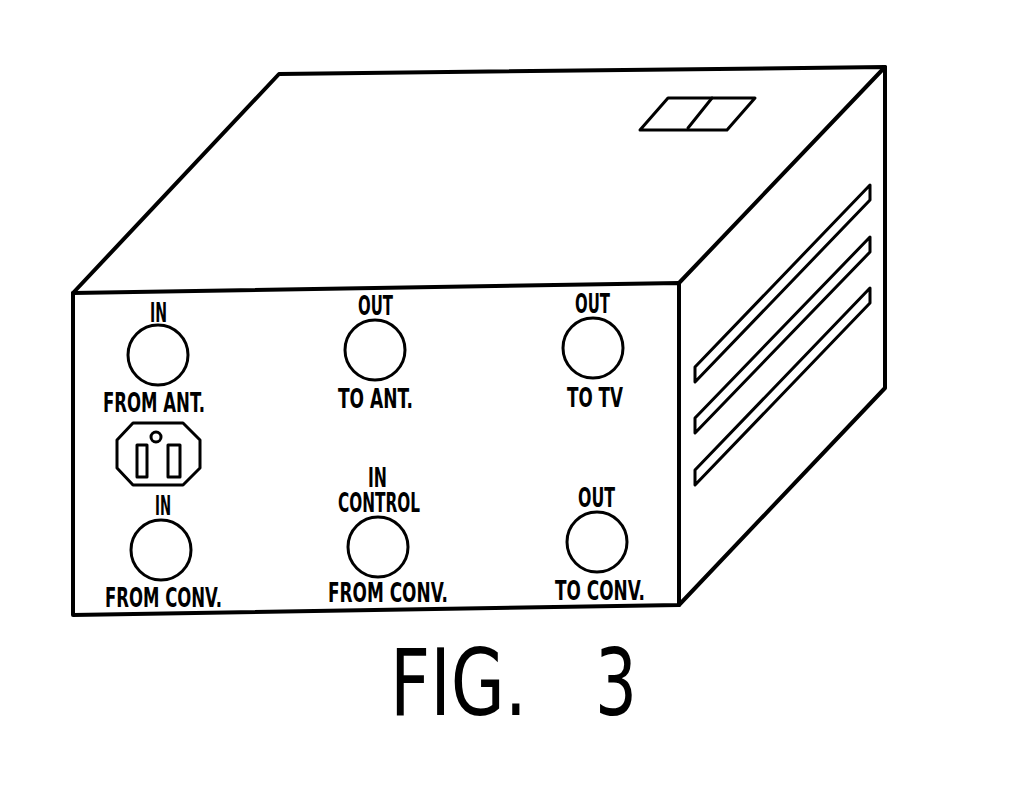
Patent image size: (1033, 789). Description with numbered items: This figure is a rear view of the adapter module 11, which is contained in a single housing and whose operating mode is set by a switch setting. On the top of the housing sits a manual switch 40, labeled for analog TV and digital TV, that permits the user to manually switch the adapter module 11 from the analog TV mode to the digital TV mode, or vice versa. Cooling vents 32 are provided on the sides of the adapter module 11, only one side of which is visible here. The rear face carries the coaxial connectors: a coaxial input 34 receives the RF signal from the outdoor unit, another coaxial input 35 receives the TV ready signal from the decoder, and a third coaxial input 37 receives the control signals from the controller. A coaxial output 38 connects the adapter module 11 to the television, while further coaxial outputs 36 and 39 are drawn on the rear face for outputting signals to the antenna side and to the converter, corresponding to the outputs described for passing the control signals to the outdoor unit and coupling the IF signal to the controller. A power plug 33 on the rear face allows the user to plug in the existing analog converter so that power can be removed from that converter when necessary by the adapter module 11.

The adapter module 11 is at (237, 640).
The cooling vents 32 is at (827, 347).
The power plug 33 is at (118, 465).
The coaxial input 34 is at (128, 358).
The coaxial input 35 is at (128, 543).
The antenna output connector 36 is at (347, 345).
The coaxial input 37 is at (348, 542).
The coaxial output 38 is at (565, 343).
The converter output connector 39 is at (565, 547).
The manual switch 40 is at (712, 97).